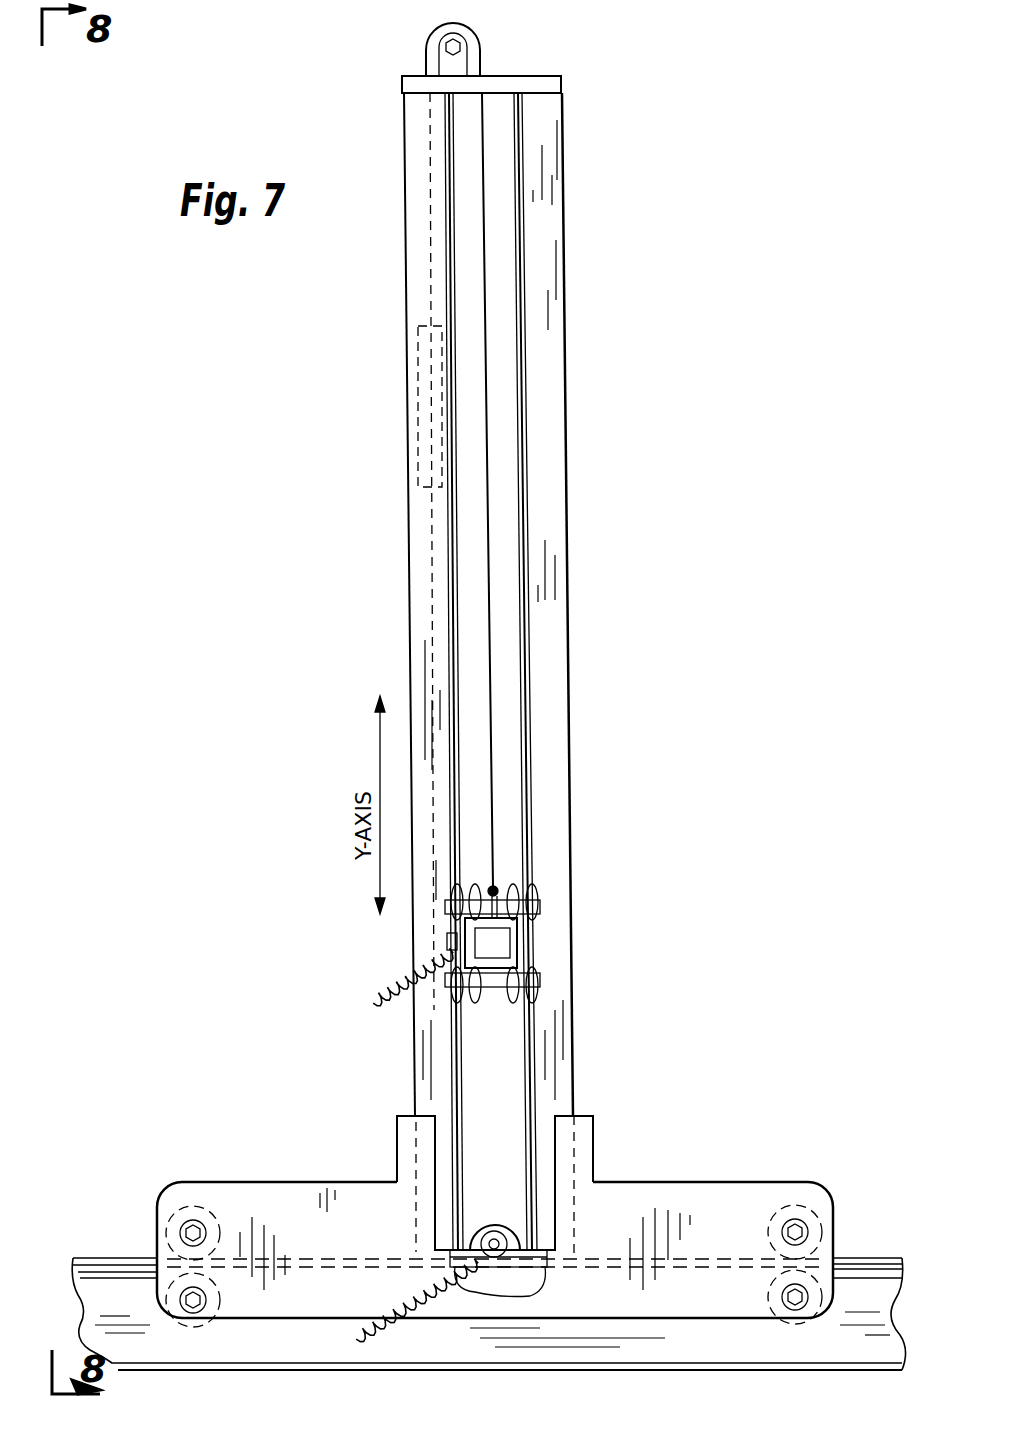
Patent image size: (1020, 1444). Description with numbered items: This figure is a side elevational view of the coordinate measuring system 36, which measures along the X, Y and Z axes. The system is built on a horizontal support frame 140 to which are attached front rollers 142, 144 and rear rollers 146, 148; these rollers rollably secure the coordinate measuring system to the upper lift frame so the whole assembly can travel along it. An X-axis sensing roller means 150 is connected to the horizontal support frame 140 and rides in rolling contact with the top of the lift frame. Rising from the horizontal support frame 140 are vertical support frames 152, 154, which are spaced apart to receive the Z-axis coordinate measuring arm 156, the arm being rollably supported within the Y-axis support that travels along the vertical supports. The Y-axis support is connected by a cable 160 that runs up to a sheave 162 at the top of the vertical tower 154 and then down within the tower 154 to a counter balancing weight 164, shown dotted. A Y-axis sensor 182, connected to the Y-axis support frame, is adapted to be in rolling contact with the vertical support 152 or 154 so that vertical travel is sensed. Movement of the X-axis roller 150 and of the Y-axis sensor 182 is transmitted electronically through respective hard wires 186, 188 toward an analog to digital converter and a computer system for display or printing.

The coordinate measuring system 36 is at (622, 711).
The horizontal support frame 140 is at (643, 1192).
The front roller 142 is at (185, 1212).
The front roller 144 is at (200, 1319).
The rear roller 146 is at (795, 1212).
The rear roller 148 is at (793, 1320).
The X-axis sensing roller means 150 is at (493, 1240).
The vertical support frame 152 is at (553, 428).
The vertical support frame 154 is at (422, 578).
The Z-axis coordinate measuring arm 156 is at (513, 938).
The cable 160 is at (486, 375).
The sheave 162 is at (468, 32).
The counter balancing weight 164 is at (432, 380).
The Y-axis sensor 182 is at (447, 945).
The hard wire 186 is at (365, 1333).
The hard wire 188 is at (400, 982).